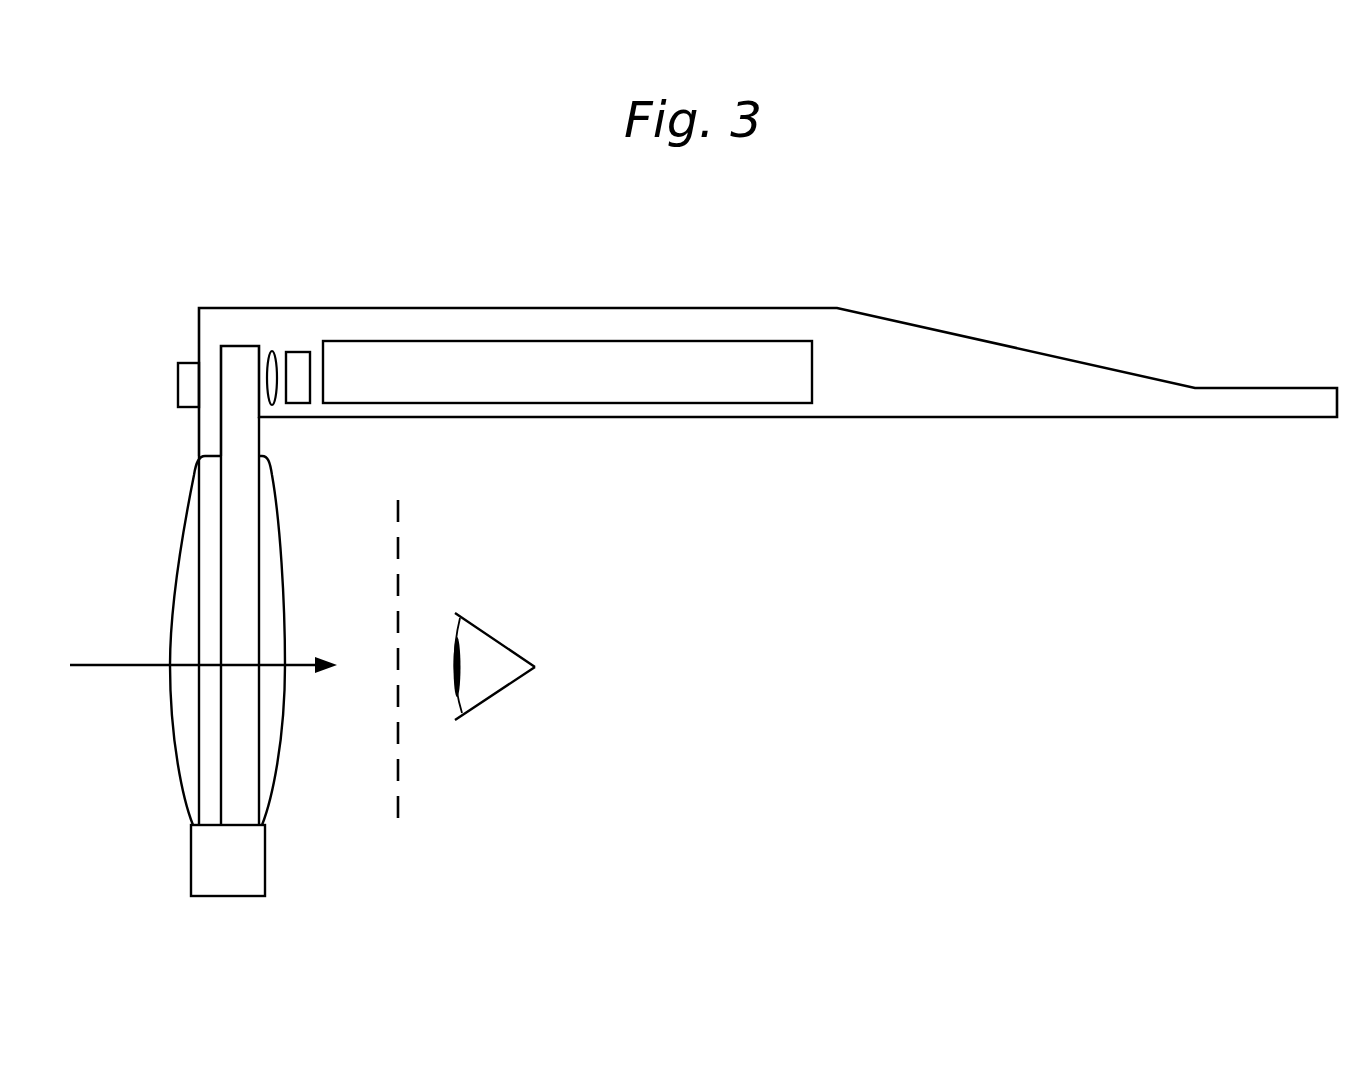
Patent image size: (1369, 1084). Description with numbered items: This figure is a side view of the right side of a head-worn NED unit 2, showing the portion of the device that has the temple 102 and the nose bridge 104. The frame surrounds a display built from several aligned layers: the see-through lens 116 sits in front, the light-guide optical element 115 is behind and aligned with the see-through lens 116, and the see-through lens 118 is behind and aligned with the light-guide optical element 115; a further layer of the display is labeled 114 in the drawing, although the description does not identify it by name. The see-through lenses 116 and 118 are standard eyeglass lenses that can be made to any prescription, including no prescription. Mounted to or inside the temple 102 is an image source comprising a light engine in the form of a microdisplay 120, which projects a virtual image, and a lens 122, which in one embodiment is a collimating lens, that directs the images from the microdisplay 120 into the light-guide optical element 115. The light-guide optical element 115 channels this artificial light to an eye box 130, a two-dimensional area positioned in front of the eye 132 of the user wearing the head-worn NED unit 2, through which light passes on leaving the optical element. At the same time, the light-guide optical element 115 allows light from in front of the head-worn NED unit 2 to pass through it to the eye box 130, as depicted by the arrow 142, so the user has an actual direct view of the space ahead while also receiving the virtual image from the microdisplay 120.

The head-worn NED unit 2 is at (202, 212).
The temple 102 is at (850, 327).
The nose bridge 104 is at (250, 870).
The lens element 114 is at (208, 502).
The light-guide optical element 115 is at (243, 522).
The see-through lens 116 is at (180, 590).
The see-through lens 118 is at (273, 608).
The microdisplay 120 is at (303, 351).
The lens 122 is at (271, 351).
The eye box 130 is at (402, 548).
The eye 132 is at (485, 633).
The arrow 142 is at (115, 668).